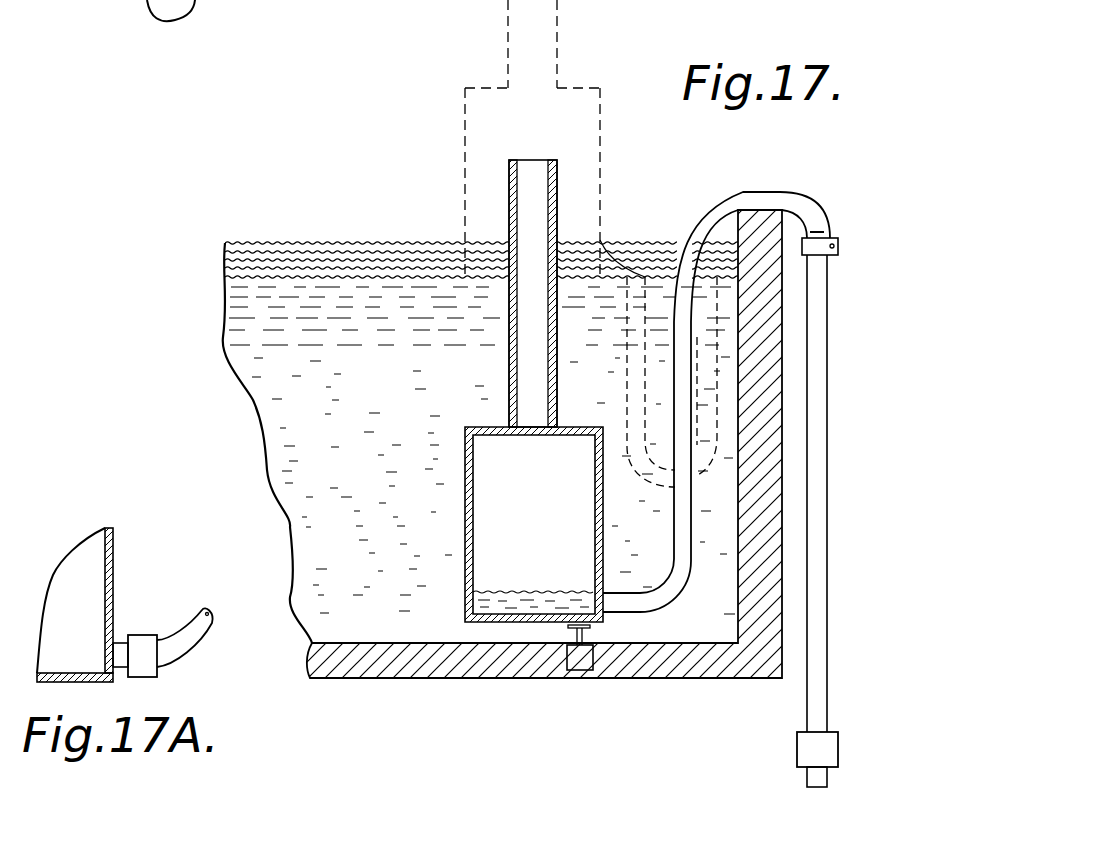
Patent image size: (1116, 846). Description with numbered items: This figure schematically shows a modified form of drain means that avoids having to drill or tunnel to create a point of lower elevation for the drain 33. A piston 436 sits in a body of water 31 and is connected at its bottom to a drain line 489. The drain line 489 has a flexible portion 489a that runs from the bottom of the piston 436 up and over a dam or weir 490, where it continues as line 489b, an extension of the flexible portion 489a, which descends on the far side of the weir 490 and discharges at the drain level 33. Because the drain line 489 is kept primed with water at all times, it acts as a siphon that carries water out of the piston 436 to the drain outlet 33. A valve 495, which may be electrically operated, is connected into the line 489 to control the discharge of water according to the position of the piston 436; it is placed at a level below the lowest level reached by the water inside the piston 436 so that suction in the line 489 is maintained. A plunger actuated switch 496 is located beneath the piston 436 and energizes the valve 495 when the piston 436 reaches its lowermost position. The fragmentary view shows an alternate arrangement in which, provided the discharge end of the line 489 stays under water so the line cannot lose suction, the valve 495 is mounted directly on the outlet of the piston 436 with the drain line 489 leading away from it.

In FIG. 17, the liquid bath 31 is at (362, 544).
In FIG. 17, the drain 33 is at (825, 793).
In FIG. 17, the piston 436 is at (463, 470).
In FIG. 17A, the piston 436 is at (113, 560).
In FIG. 17, the drain line 489 is at (773, 196).
In FIG. 17A, the drain line 489 is at (185, 632).
In FIG. 17, the flexible portion 489a is at (690, 250).
In FIG. 17, the line 489b is at (818, 363).
In FIG. 17, the dam or weir 490 is at (748, 678).
In FIG. 17, the valve 495 is at (832, 737).
In FIG. 17A, the valve 495 is at (145, 672).
In FIG. 17, the plunger actuated switch 496 is at (578, 673).